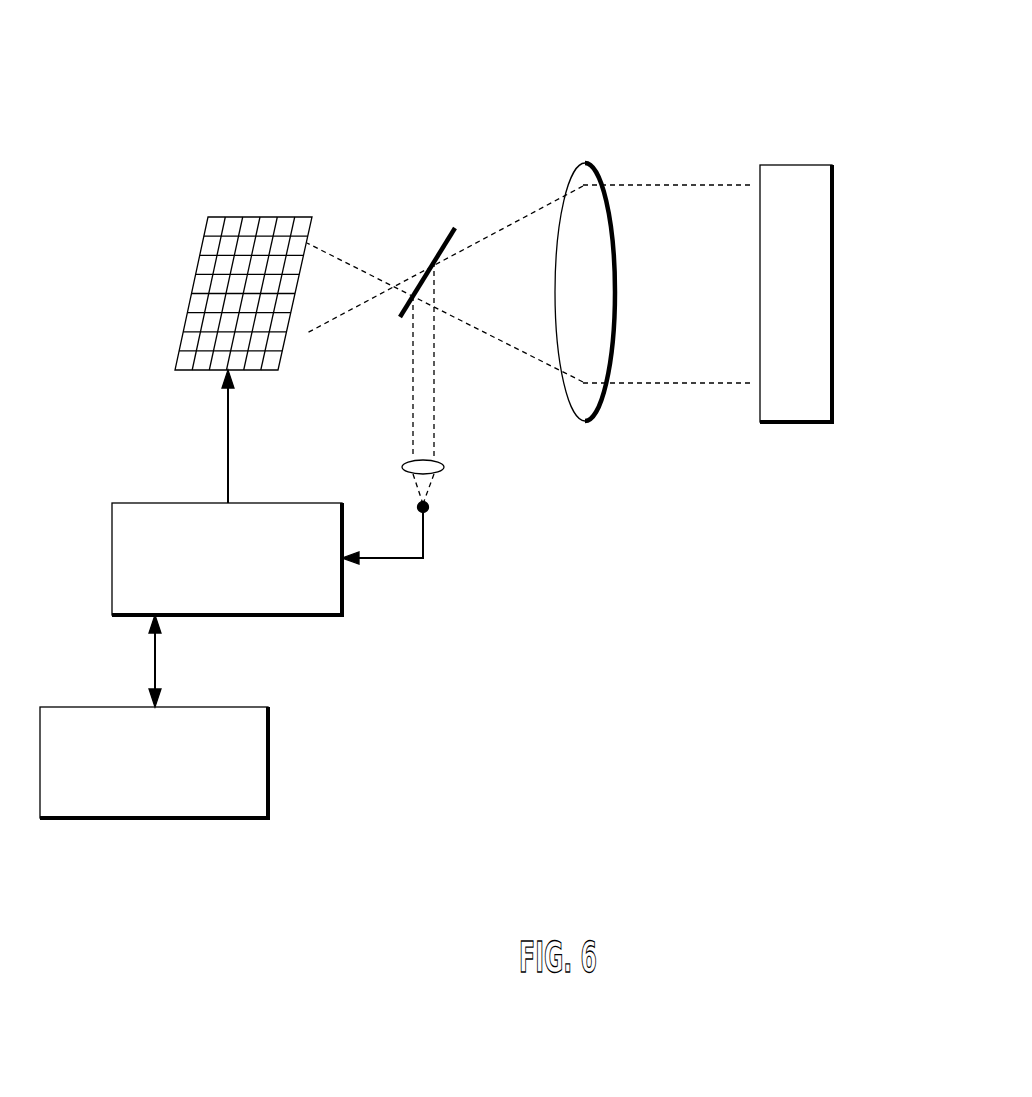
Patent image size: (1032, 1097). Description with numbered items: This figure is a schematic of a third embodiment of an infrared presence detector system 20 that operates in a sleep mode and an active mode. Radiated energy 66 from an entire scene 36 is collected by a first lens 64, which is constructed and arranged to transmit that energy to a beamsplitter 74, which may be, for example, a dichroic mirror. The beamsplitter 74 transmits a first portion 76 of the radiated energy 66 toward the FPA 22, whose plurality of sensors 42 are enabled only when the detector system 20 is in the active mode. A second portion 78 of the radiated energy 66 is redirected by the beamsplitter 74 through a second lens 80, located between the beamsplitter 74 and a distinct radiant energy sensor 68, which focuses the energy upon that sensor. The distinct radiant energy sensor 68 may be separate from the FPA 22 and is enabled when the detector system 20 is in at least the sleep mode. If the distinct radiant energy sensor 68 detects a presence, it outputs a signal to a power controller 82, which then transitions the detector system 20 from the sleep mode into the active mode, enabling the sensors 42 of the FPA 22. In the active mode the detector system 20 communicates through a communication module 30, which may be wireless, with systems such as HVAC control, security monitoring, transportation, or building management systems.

The detector system 20 is at (792, 66).
The FPA 22 is at (276, 168).
The sensors 42 is at (197, 300).
The beamsplitter 74 is at (440, 247).
The portion of the radiated energy 76 is at (363, 286).
The second portion of the radiated energy 78 is at (423, 342).
The first lens 64 is at (575, 336).
The radiated energy 66 is at (655, 355).
The scene 36 is at (833, 240).
The second lens 80 is at (443, 465).
The distinct radiant energy sensor 68 is at (433, 507).
The power controller 82 is at (342, 590).
The communication module 30 is at (268, 767).